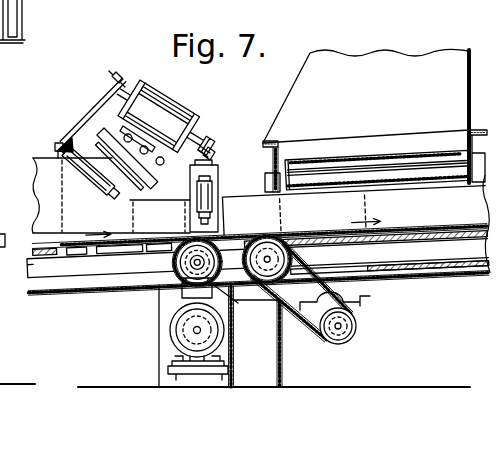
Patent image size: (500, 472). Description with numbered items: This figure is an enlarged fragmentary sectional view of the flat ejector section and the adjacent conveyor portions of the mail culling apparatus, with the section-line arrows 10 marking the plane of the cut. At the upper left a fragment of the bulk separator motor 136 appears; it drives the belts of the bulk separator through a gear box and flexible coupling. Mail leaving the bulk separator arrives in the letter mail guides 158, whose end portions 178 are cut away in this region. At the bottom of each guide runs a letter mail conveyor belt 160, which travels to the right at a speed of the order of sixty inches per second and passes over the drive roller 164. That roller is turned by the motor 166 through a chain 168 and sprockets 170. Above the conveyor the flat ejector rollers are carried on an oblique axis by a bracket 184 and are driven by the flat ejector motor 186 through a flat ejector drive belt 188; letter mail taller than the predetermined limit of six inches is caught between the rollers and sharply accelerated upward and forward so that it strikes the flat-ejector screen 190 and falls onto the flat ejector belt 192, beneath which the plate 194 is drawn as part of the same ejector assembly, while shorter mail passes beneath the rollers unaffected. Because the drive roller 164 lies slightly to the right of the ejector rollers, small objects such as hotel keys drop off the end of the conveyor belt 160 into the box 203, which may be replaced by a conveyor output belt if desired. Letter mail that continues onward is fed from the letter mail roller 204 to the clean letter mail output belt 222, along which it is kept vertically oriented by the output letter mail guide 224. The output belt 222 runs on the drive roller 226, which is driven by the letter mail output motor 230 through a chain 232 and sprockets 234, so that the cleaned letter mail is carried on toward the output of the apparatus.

The section line indicator 10 is at (184, 152).
The bulk separator motor 136 is at (14, 12).
The letter mail guide 158 is at (47, 197).
The letter mail conveyor belt 160 is at (92, 293).
The drive roller 164 is at (185, 277).
The motor 166 is at (214, 330).
The chain 168 is at (178, 300).
The sprockets 170 is at (200, 268).
The end portions 178 is at (218, 157).
The bracket 184 is at (57, 151).
The flat ejector motor 186 is at (160, 97).
The flat ejector drive belt 188 is at (97, 107).
The flat-ejector screen 190 is at (416, 62).
The flat ejector belt 192 is at (437, 155).
The lower plate 194 is at (398, 160).
The box 203 is at (282, 360).
The letter mail roller 204 is at (220, 204).
The clean letter mail output belt 222 is at (404, 275).
The output letter mail guide 224 is at (449, 212).
The drive roller 226 is at (290, 260).
The letter mail output motor 230 is at (357, 330).
The chain 232 is at (353, 306).
The sprockets 234 is at (271, 302).